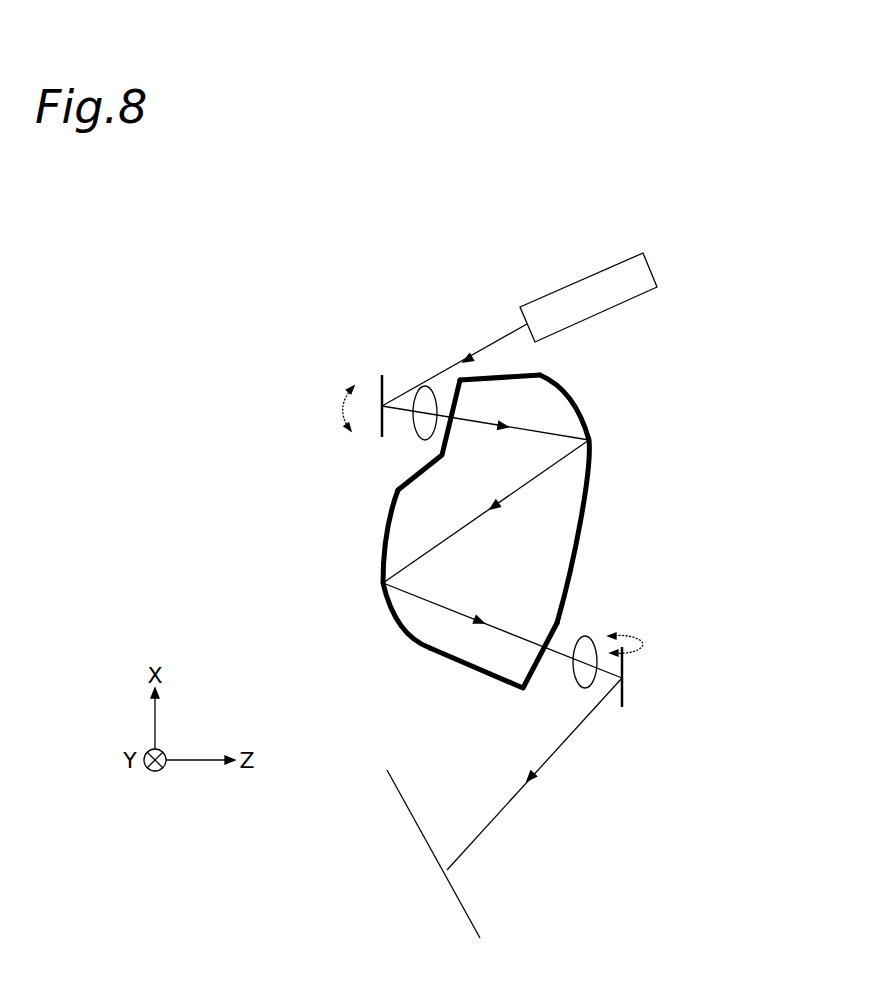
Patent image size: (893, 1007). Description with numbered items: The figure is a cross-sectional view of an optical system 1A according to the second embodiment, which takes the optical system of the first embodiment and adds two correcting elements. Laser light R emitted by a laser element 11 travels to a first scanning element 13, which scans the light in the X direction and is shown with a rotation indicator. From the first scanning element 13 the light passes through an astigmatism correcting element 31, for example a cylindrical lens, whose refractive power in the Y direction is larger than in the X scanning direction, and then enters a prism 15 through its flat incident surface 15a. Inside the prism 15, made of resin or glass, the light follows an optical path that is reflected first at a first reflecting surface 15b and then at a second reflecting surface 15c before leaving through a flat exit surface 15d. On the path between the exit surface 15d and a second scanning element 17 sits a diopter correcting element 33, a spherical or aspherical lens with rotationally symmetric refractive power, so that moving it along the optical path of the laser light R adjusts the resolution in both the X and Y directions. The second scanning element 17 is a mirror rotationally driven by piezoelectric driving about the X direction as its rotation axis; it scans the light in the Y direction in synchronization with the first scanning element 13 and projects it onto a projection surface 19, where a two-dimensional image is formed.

The optical system 1A is at (686, 221).
The laser element 11 is at (652, 268).
The laser light R is at (487, 345).
The first scanning element 13 is at (381, 378).
The astigmatism correcting element 31 is at (422, 384).
The prism 15 is at (491, 543).
The incident surface 15a is at (440, 448).
The first reflecting surface 15b is at (593, 458).
The second reflecting surface 15c is at (377, 552).
The exit surface 15d is at (531, 683).
The diopter correcting element 33 is at (593, 634).
The second scanning element 17 is at (628, 668).
The projection surface 19 is at (423, 837).